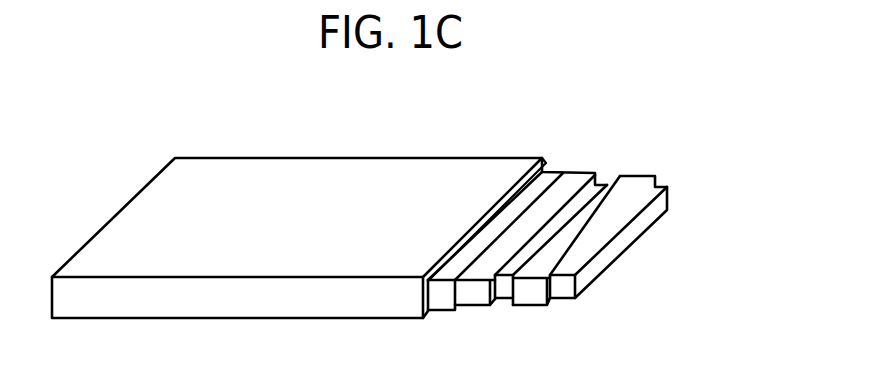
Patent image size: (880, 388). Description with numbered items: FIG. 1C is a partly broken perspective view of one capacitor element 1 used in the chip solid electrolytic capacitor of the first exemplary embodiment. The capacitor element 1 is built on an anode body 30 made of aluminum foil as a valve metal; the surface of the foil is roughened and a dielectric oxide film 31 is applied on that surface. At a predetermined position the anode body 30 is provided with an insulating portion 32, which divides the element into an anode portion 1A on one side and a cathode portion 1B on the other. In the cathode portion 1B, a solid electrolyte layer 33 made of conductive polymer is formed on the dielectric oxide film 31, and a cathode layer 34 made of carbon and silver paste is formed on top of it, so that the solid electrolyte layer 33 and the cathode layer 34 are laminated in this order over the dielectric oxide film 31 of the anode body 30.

The capacitor element 1 is at (117, 121).
The anode portion 1A is at (592, 315).
The cathode portion 1B is at (478, 325).
The anode body 30 is at (623, 198).
The dielectric oxide film 31 is at (570, 186).
The insulating portion 32 is at (583, 197).
The solid electrolyte layer 33 is at (543, 178).
The cathode layer 34 is at (462, 185).